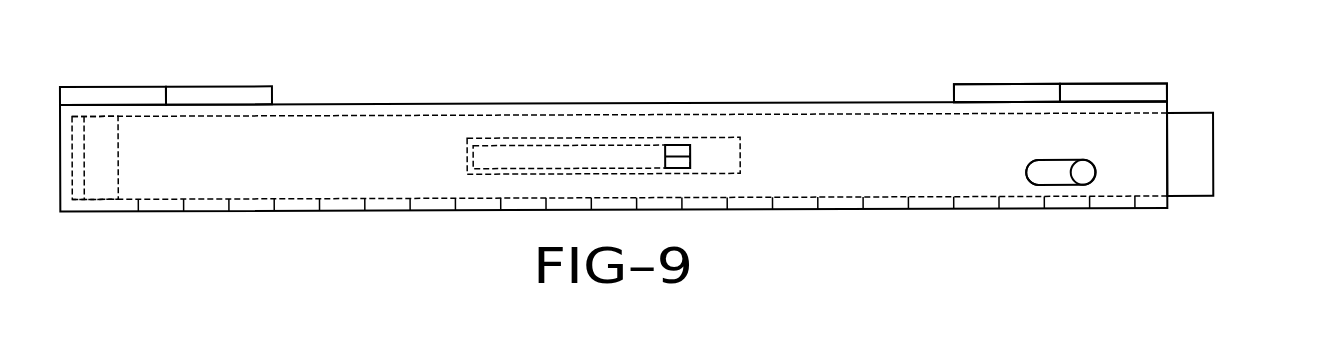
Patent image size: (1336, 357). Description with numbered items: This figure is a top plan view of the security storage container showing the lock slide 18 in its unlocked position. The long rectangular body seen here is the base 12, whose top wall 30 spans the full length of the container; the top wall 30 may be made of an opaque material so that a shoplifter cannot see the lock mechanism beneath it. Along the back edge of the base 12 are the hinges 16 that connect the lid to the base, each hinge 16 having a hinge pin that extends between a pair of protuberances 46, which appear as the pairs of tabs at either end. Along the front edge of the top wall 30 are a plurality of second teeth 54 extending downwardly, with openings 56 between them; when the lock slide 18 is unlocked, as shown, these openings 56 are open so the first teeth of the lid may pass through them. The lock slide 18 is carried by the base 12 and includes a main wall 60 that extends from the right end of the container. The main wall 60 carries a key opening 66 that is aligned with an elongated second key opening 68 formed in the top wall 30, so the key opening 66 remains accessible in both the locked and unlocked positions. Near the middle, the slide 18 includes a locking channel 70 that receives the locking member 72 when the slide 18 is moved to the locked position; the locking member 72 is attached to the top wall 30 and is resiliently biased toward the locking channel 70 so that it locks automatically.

The base 12 is at (422, 103).
The hinge 16 is at (1141, 84).
The lock slide 18 is at (1203, 147).
The top wall 30 is at (810, 135).
The protuberances 46 is at (119, 90).
The second teeth 54 is at (199, 213).
The openings 56 is at (256, 213).
The main wall 60 is at (886, 135).
The key opening 66 is at (1088, 176).
The second key opening 68 is at (1040, 172).
The locking channel 70 is at (721, 141).
The locking member 72 is at (583, 150).